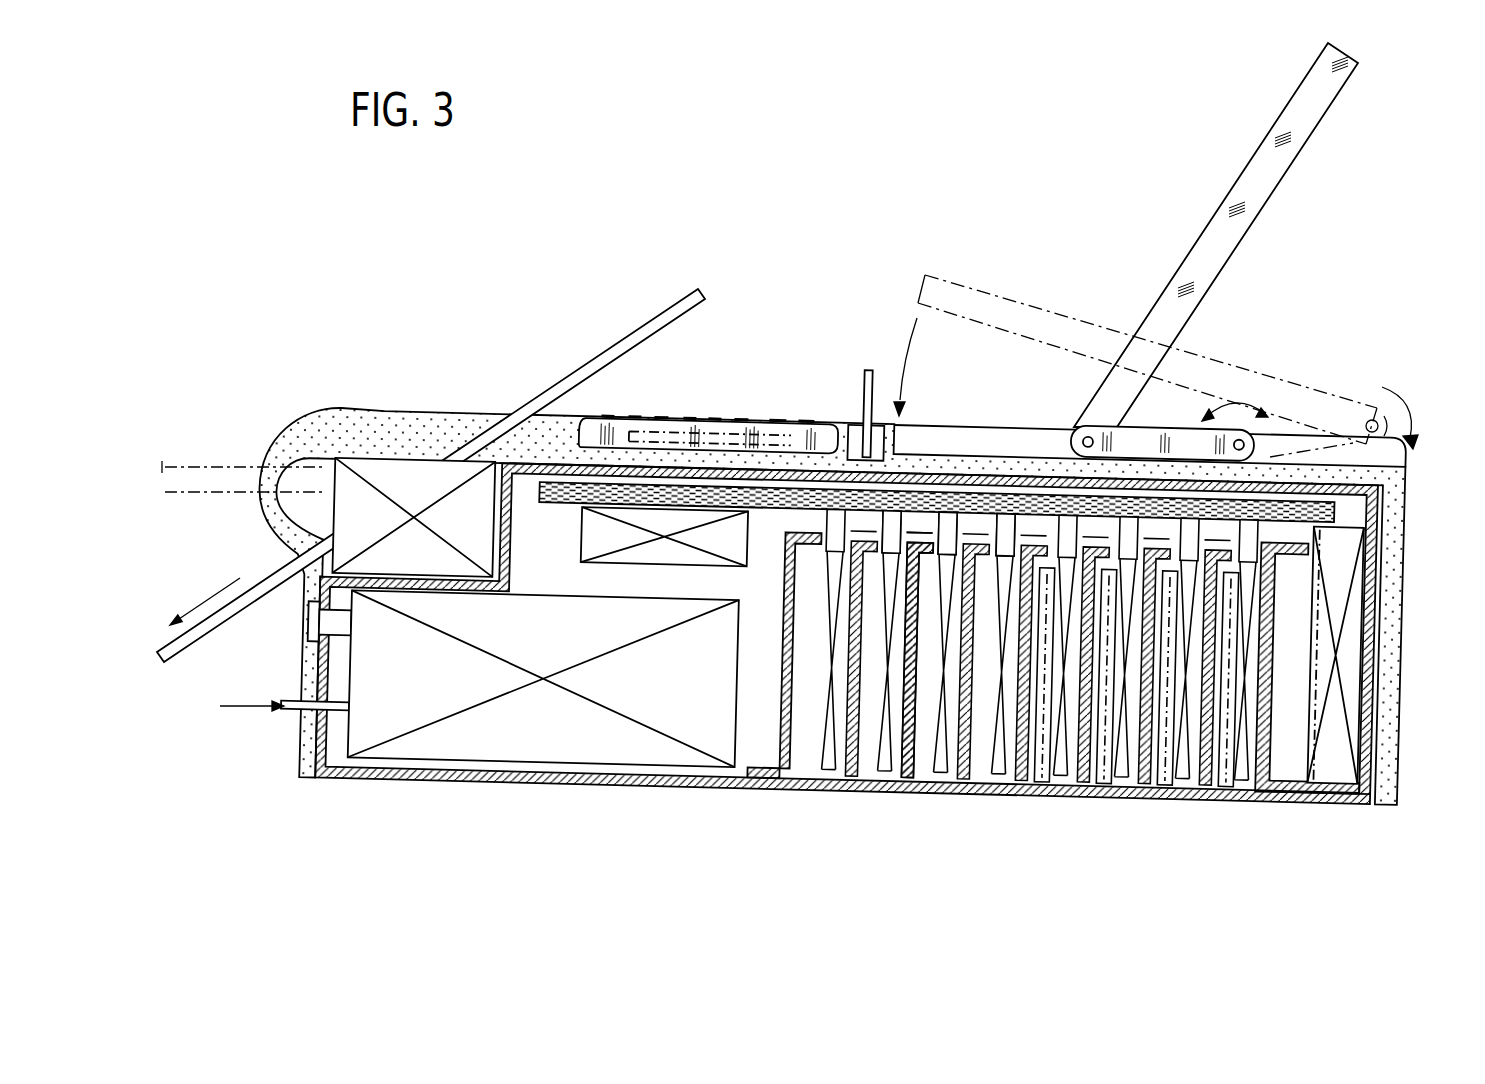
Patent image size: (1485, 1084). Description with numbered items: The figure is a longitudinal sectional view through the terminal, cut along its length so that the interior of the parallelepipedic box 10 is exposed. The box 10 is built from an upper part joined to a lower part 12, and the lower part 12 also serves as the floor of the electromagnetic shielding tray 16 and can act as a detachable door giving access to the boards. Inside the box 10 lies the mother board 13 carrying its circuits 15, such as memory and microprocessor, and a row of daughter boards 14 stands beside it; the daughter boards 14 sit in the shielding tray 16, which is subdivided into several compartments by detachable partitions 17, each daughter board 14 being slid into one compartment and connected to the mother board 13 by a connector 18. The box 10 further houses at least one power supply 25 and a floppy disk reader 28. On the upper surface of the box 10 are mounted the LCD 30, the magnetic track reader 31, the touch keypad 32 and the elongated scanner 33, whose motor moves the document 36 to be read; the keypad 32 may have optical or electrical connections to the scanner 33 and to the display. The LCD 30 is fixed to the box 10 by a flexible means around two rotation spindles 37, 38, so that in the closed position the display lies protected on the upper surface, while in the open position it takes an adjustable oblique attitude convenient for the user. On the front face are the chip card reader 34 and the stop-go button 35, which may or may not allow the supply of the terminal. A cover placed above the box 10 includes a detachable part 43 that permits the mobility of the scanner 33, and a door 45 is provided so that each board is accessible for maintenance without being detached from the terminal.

The parallelepipedic box 10 is at (356, 782).
The lower part 12 is at (1307, 800).
The mother board 13 is at (1340, 517).
The daughter boards 14 is at (975, 775).
The circuits 15 is at (610, 542).
The electromagnetic shielding tray 16 is at (788, 738).
The detachable partitions 17 is at (925, 745).
The connectors 18 is at (1007, 537).
The power supply 25 is at (547, 737).
The floppy disk reader 28 is at (1345, 703).
The LCD 30 is at (1245, 183).
The magnetic track reader 31 is at (855, 427).
The touch keypad 32 is at (702, 418).
The scanner 33 is at (413, 482).
The chip card reader 34 is at (295, 708).
The stop-go button 35 is at (313, 623).
The document 36 is at (592, 356).
The rotation spindle 37 is at (1085, 432).
The rotation spindle 38 is at (1237, 443).
The detachable part 43 is at (283, 450).
The door 45 is at (1173, 803).